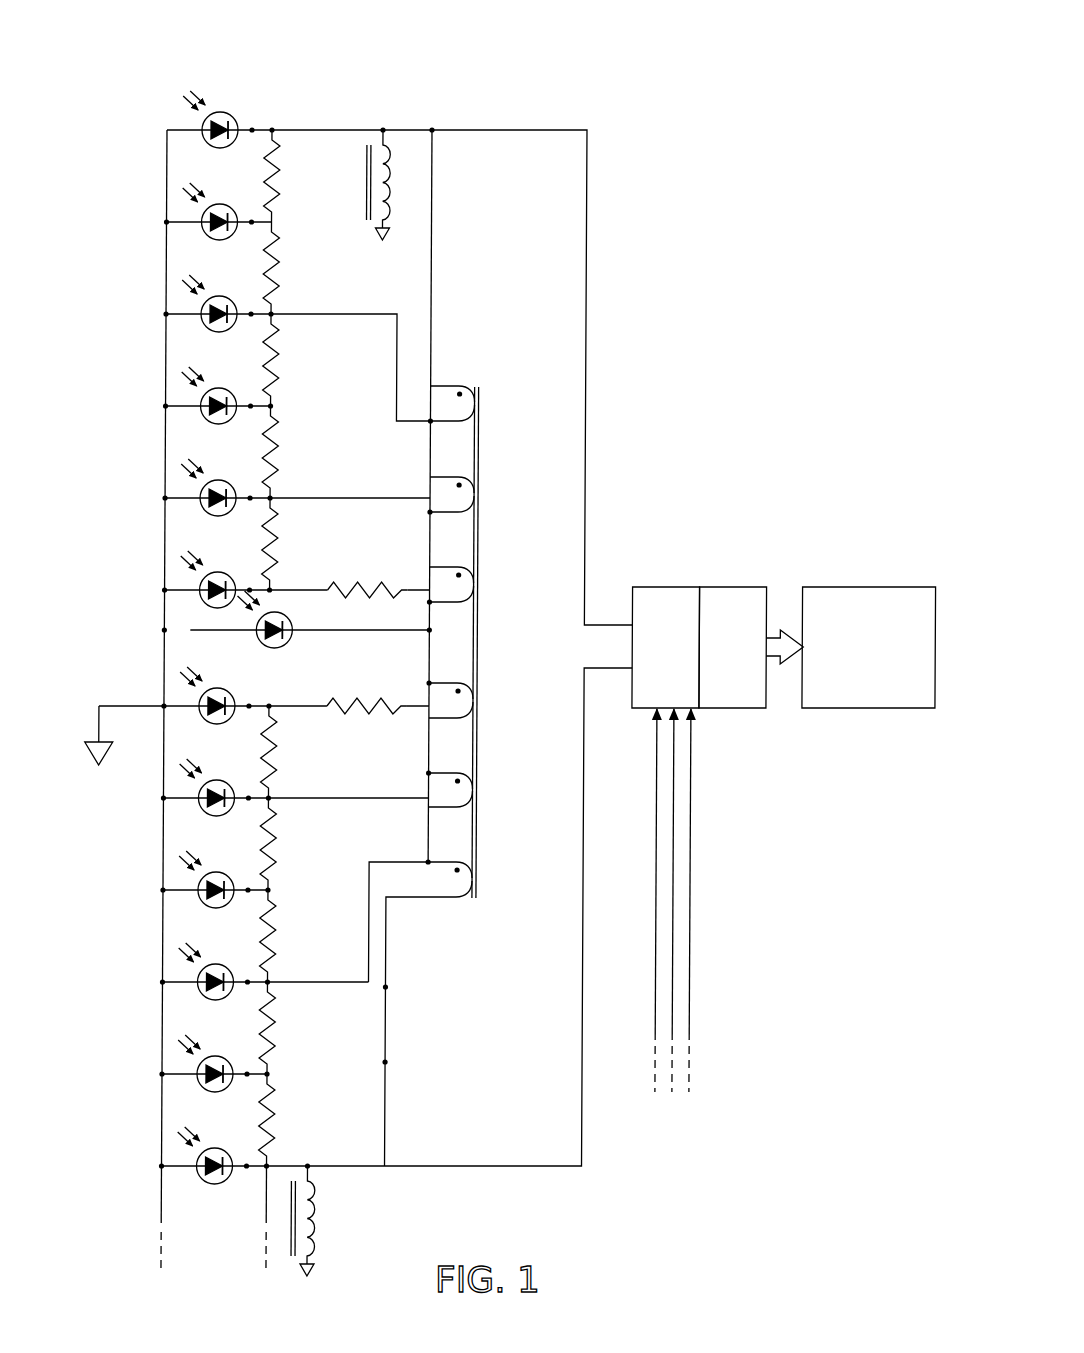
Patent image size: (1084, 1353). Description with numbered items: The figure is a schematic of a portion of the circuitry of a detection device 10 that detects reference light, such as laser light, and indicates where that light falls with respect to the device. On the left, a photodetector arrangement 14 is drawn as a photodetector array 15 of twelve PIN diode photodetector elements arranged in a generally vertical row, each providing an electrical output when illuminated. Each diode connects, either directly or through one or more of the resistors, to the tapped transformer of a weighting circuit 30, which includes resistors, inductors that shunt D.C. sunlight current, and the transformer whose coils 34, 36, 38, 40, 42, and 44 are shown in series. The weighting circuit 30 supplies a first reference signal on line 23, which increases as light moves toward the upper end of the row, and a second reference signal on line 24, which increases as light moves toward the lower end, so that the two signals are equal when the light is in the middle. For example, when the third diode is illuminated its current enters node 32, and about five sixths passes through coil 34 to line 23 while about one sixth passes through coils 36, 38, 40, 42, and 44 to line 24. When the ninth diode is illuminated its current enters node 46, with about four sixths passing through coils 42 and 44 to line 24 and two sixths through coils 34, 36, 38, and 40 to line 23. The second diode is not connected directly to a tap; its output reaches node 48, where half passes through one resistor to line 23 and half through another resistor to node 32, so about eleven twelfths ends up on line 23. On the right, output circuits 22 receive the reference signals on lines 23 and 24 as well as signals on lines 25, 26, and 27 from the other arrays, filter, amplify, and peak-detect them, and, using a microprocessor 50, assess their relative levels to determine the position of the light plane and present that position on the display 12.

The detection device 10 is at (706, 217).
The display 12 is at (862, 586).
The photodetector arrangement 14 is at (187, 84).
The photodetector array 15 is at (137, 1273).
The output circuits 22 is at (681, 586).
The line 23 is at (587, 418).
The line 24 is at (587, 962).
The line 25 is at (660, 883).
The line 26 is at (677, 905).
The line 27 is at (694, 849).
The weighting circuit 30 is at (505, 120).
The node 32 is at (430, 424).
The coil 34 is at (481, 412).
The coil 36 is at (481, 502).
The coil 38 is at (481, 592).
The coil 40 is at (481, 709).
The coil 42 is at (481, 799).
The coil 44 is at (481, 887).
The node 46 is at (431, 773).
The node 48 is at (282, 222).
The microprocessor 50 is at (752, 708).